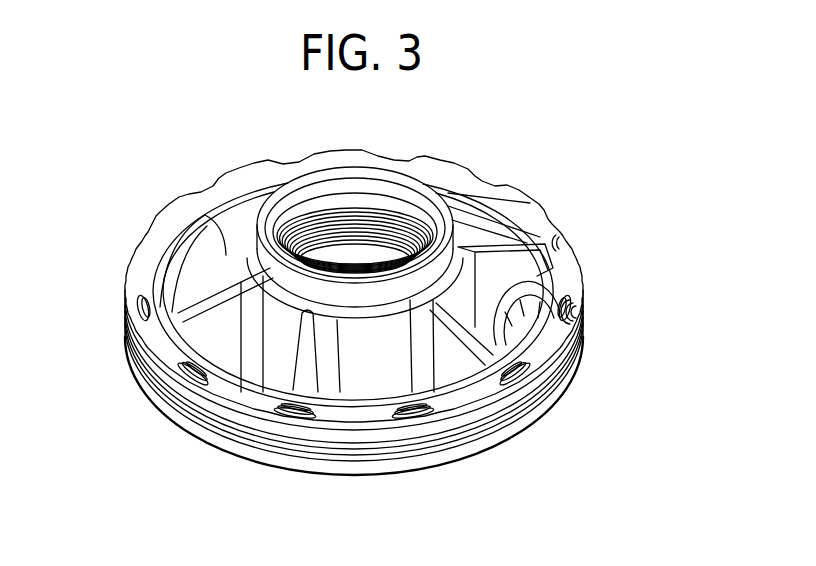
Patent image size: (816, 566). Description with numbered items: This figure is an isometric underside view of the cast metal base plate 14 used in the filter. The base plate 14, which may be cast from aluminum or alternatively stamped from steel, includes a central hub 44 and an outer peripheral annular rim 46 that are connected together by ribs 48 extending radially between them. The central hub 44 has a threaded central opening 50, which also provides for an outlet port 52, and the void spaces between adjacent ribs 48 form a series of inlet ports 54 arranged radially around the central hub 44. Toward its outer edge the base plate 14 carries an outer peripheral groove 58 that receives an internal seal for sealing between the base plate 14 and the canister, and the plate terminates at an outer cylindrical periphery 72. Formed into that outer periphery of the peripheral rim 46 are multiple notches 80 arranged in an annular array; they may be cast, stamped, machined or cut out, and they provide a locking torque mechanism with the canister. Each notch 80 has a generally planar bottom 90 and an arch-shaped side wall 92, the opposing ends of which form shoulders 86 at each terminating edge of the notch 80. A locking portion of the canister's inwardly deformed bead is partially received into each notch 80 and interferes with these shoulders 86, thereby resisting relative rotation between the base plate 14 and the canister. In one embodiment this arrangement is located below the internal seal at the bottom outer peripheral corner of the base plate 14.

The base plate 14 is at (562, 86).
The central hub 44 is at (463, 190).
The outer peripheral annular rim 46 is at (570, 275).
The ribs 48 is at (530, 333).
The threaded central opening 50 is at (317, 243).
The outlet port 52 is at (358, 228).
The inlet ports 54 is at (213, 329).
The outer peripheral groove 58 is at (180, 417).
The outer cylindrical periphery 72 is at (423, 458).
The notches 80 is at (413, 415).
The shoulders 86 is at (343, 425).
The planar bottom 90 is at (308, 425).
The arch-shaped side wall 92 is at (252, 408).